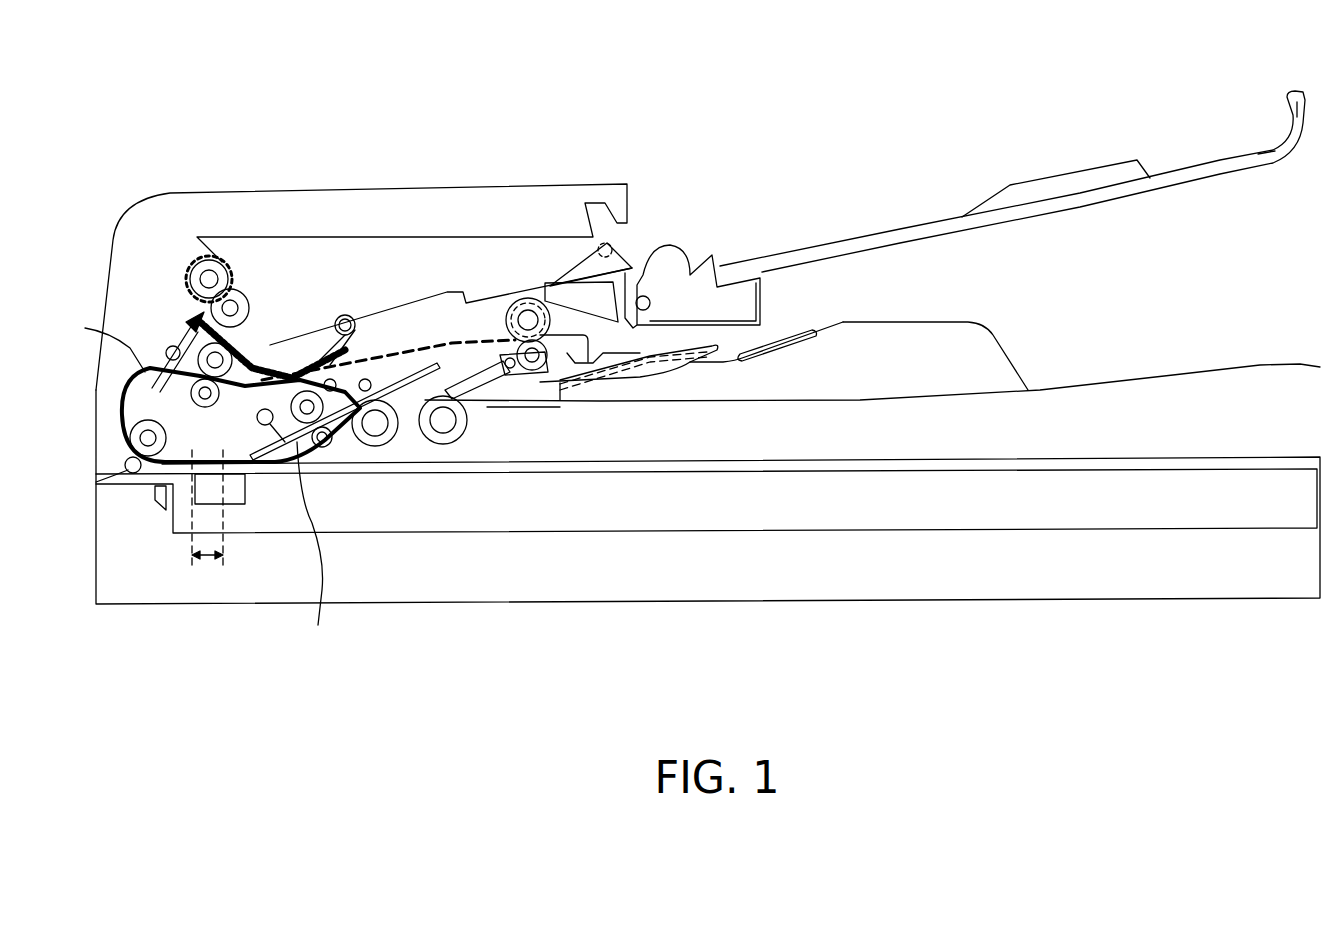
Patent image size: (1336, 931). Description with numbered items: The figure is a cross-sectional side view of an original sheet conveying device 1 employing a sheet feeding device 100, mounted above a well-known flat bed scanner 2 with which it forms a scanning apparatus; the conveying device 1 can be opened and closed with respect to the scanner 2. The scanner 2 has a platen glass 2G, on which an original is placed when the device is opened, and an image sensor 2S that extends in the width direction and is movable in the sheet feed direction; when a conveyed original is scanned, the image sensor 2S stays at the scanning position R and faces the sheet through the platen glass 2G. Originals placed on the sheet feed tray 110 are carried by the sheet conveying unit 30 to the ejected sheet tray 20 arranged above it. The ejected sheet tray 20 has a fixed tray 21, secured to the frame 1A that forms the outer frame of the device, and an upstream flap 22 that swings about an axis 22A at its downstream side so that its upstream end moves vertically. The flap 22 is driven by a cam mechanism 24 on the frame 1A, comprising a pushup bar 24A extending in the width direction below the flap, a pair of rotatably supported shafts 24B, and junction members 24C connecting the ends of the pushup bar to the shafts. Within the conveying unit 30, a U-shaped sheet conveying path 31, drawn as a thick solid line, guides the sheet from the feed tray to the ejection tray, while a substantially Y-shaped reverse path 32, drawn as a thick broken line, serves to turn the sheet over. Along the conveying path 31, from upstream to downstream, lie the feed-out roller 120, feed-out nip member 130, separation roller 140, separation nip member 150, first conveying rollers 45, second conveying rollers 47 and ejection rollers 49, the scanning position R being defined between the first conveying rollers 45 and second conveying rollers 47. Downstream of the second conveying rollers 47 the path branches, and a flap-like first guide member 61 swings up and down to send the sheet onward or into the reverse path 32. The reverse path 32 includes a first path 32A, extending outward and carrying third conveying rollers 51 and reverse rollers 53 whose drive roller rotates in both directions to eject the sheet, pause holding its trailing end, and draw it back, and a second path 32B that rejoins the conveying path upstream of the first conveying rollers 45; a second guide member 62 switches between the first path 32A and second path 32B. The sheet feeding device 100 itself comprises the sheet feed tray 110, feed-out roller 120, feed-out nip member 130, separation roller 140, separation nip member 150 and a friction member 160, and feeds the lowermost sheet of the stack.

The original sheet conveying device 1 is at (140, 146).
The frame 1A is at (103, 256).
The flat bed scanner 2 is at (93, 545).
The image sensor 2S is at (232, 505).
The platen glass 2G is at (555, 467).
The scanning position R is at (207, 520).
The ejected sheet tray 20 is at (1078, 136).
The fixed tray 21 is at (838, 226).
The flap 22 is at (490, 283).
The axis 22A is at (613, 246).
The cam mechanism 24 is at (325, 318).
The pushup bar 24A is at (308, 322).
The shafts 24B is at (343, 313).
The junction members 24C is at (363, 330).
The sheet conveying unit 30 is at (320, 170).
The sheet conveying path 31 is at (108, 433).
The reverse path 32 is at (420, 330).
The first path 32A is at (241, 415).
The second path 32B is at (402, 405).
The first conveying rollers 45 is at (318, 446).
The second conveying rollers 47 is at (118, 465).
The ejection rollers 49 is at (245, 285).
The third conveying rollers 51 is at (186, 381).
The reverse rollers 53 is at (545, 305).
The first guide member 61 is at (112, 348).
The second guide member 62 is at (340, 450).
The sheet feeding device 100 is at (742, 341).
The sheet feed tray 110 is at (1173, 366).
The feed-out roller 120 is at (455, 445).
The feed-out nip member 130 is at (476, 395).
The separation roller 140 is at (383, 448).
The separation nip member 150 is at (442, 352).
The friction member 160 is at (662, 388).